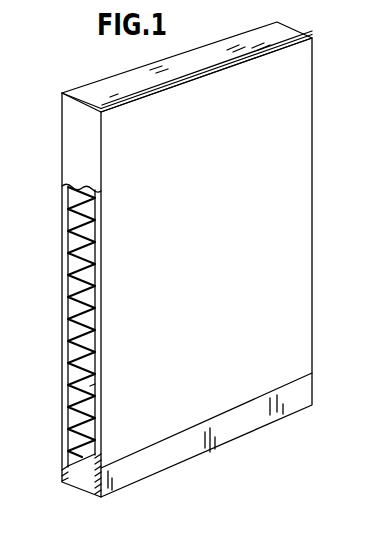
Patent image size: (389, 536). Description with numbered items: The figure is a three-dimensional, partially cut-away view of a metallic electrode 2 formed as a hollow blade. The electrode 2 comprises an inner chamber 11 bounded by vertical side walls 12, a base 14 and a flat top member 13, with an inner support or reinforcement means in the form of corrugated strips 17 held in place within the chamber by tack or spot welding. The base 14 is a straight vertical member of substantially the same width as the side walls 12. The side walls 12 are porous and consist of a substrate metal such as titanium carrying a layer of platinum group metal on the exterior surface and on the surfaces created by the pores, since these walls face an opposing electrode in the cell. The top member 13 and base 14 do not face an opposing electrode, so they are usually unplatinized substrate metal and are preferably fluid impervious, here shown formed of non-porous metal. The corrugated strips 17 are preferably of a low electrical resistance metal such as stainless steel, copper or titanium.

The electrode 2 is at (313, 99).
The inner chamber 11 is at (78, 311).
The vertical side walls 12 is at (63, 233).
The top member 13 is at (212, 51).
The base 14 is at (63, 470).
The corrugated strips 17 is at (82, 385).